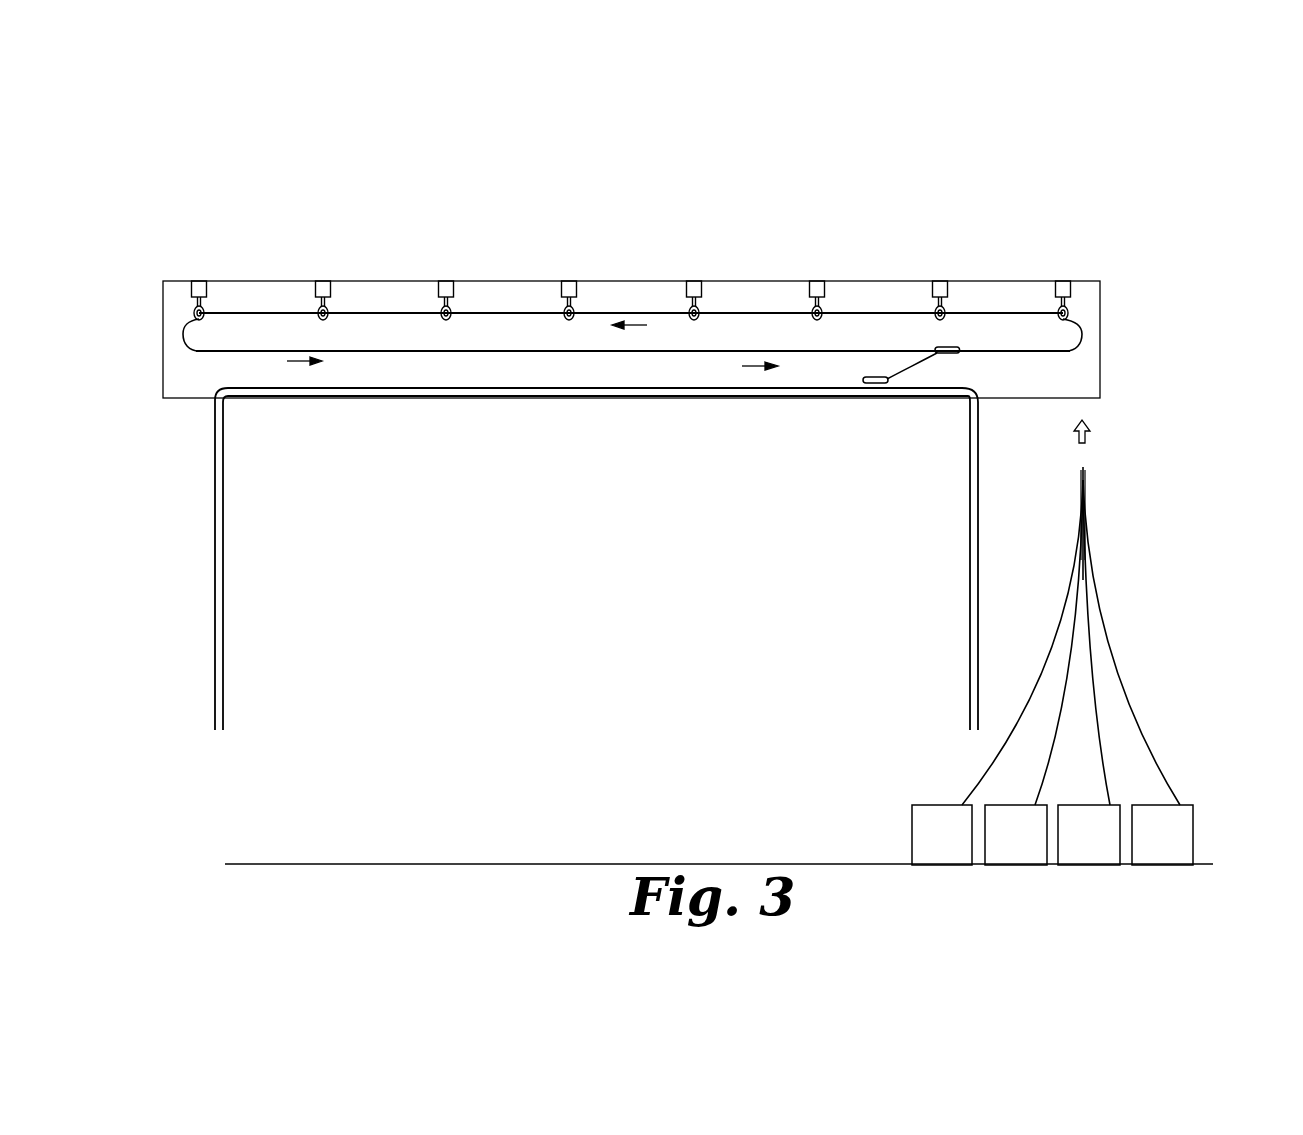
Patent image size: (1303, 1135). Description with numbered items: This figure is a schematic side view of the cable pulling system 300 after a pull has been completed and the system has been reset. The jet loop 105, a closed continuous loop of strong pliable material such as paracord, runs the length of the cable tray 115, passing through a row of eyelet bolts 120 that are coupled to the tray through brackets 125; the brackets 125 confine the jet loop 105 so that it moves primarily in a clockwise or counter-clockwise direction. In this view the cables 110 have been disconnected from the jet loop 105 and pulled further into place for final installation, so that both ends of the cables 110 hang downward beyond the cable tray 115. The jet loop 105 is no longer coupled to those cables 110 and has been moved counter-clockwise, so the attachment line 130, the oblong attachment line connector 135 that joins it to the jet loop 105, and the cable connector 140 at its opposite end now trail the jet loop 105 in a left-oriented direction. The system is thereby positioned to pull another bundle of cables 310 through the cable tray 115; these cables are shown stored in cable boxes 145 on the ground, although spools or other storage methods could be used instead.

The wind turbine blade transport/handling system 300 is at (284, 118).
The jet loop 105 is at (489, 353).
The cables 110 is at (968, 553).
The cable tray 115 is at (609, 398).
The eyelet bolt 120 is at (196, 314).
The brackets 125 is at (324, 281).
The attachment line 130 is at (960, 368).
The attachment line connector 135 is at (950, 346).
The cable connector 140 is at (871, 386).
The cable boxes 145 is at (993, 805).
The another bundle of cables 310 is at (1086, 530).